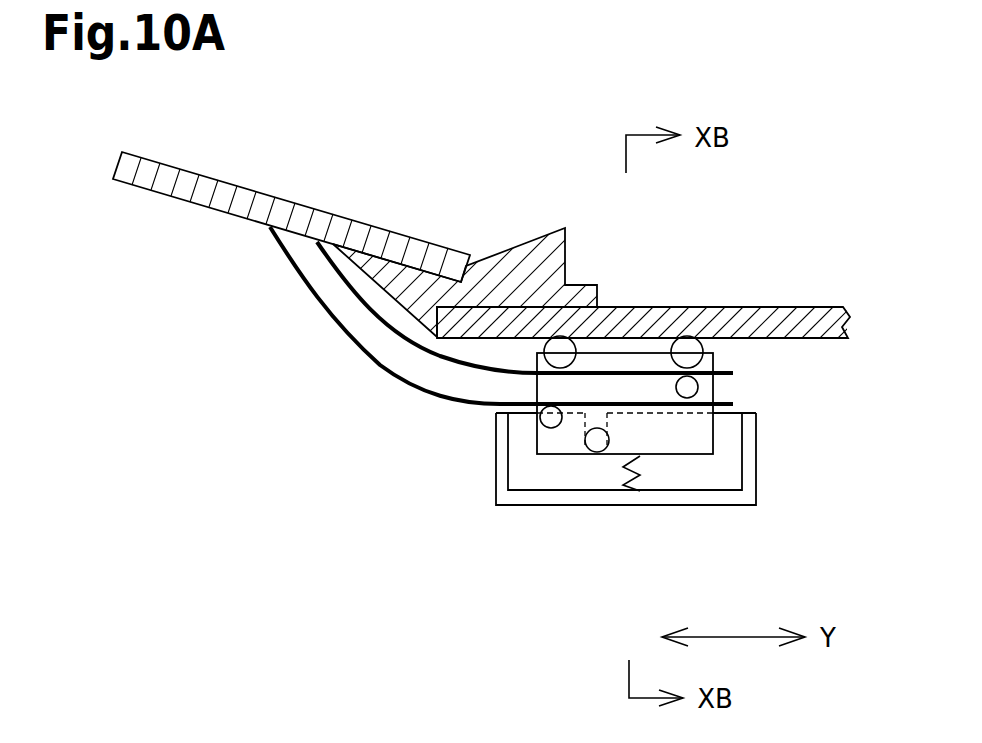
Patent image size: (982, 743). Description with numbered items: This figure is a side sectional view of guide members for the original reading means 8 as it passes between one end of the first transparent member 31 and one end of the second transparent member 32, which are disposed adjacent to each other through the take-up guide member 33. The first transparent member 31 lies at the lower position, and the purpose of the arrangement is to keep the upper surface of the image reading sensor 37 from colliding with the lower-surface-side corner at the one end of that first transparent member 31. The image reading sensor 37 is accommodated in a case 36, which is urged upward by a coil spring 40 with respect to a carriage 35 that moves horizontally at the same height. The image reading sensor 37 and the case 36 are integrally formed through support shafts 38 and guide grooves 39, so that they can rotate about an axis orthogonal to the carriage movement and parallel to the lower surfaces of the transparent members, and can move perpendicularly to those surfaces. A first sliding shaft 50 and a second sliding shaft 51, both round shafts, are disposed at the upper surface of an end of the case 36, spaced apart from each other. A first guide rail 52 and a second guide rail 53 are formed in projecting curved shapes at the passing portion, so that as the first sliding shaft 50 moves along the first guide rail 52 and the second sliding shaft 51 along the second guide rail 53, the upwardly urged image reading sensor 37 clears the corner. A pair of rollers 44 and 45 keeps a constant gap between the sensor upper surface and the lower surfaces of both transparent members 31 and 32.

The original reading means 8 is at (815, 540).
The first transparent member 31 is at (797, 318).
The second transparent member 32 is at (207, 193).
The take-up guide member 33 is at (524, 250).
The carriage 35 is at (745, 474).
The case 36 is at (688, 440).
The image reading sensor 37 is at (538, 353).
The support shaft 38 is at (598, 455).
The guide groove 39 is at (587, 455).
The coil spring 40 is at (640, 475).
The roller 44 is at (568, 348).
The roller 45 is at (692, 343).
The first sliding shaft 50 is at (545, 421).
The second sliding shaft 51 is at (692, 386).
The first guide rail 52 is at (306, 318).
The second guide rail 53 is at (383, 342).